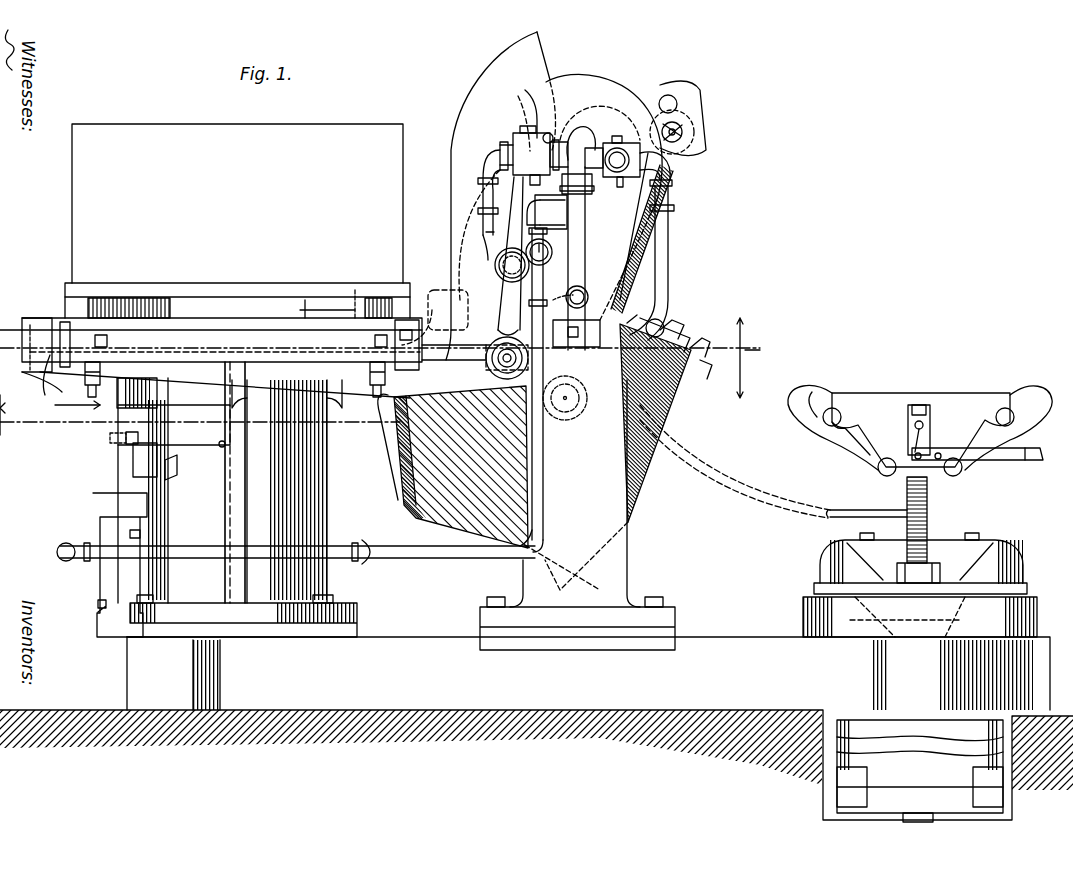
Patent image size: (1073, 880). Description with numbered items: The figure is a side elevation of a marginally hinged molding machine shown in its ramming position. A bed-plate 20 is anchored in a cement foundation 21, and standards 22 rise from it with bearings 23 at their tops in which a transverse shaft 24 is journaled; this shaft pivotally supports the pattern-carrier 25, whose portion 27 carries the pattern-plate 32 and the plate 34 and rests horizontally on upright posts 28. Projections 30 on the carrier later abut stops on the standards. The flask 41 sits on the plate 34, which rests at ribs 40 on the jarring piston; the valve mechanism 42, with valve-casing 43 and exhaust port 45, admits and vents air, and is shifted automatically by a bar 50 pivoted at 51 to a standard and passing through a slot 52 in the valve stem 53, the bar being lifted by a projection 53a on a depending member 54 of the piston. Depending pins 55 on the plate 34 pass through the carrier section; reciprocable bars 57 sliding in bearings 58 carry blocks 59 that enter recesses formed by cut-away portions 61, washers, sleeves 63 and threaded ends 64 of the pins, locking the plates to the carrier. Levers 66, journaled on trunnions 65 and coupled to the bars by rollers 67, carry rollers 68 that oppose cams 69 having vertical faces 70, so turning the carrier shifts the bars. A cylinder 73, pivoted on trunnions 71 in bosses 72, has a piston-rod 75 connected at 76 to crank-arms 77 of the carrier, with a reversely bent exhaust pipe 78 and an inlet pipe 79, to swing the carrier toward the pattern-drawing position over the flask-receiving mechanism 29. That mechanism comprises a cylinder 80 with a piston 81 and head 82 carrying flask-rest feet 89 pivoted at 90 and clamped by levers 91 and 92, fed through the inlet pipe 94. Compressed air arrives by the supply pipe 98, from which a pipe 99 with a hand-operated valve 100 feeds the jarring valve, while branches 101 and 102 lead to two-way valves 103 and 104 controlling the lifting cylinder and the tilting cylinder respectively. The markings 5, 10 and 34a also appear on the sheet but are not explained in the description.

The section line 5 is at (755, 358).
The bracket 10 is at (200, 415).
The bed-plate 20 is at (588, 673).
The cement foundation 21 is at (494, 730).
The standards 22 is at (622, 580).
The bearings 23 is at (597, 120).
The shaft 24 is at (580, 126).
The pattern-carrier 25 is at (285, 360).
The portion of the pattern-carrier 27 is at (32, 325).
The upright posts 28 is at (236, 615).
The flask-receiving mechanism 29 is at (921, 446).
The projections 30 is at (542, 54).
The pattern-plate 32 is at (237, 292).
The plate 34 is at (318, 305).
The guide block 34a is at (378, 265).
The ribs 40 is at (435, 317).
The flask 41 is at (237, 203).
The valve mechanism 42 is at (293, 565).
The valve-casing 43 is at (122, 557).
The exhaust port 45 is at (88, 600).
The bar 50 is at (197, 446).
The pivot 51 is at (222, 450).
The slot 52 is at (125, 445).
The valve stem 53 is at (110, 440).
The projection 53a is at (172, 470).
The depending member 54 is at (150, 392).
The depending pins 55 is at (105, 347).
The reciprocable bars 57 is at (280, 380).
The bearings 58 is at (405, 395).
The blocks 59 is at (177, 353).
The cut-away portions 61 is at (90, 332).
The sleeves 63 is at (221, 369).
The threaded ends 64 is at (375, 395).
The trunnions 65 is at (500, 268).
The levers 66 is at (508, 232).
The rollers 67 is at (507, 380).
The rollers 68 is at (520, 132).
The cams 69 is at (600, 104).
The vertical cam faces 70 is at (516, 110).
The trunnions 71 is at (568, 420).
The bosses 72 is at (580, 412).
The cylinder 73 is at (640, 478).
The piston-rod 75 is at (633, 232).
The pivotal connection 76 is at (678, 140).
The crank-arms 77 is at (700, 108).
The exhaust pipe 78 is at (395, 430).
The pipe 79 is at (670, 290).
The cylinder 80 is at (920, 771).
The piston 81 is at (926, 520).
The head 82 is at (976, 611).
The feet 89 is at (810, 395).
The pivots 90 is at (832, 417).
The lever 91 is at (1005, 462).
The lever 92 is at (930, 440).
The inlet pipe 94 is at (475, 213).
The supply pipe 98 is at (588, 290).
The pipe 99 is at (625, 210).
The hand-operated valve 100 is at (550, 258).
The branch 101 is at (552, 120).
The branch 102 is at (632, 146).
The two-way valve 103 is at (505, 148).
The two-way valve 104 is at (672, 180).